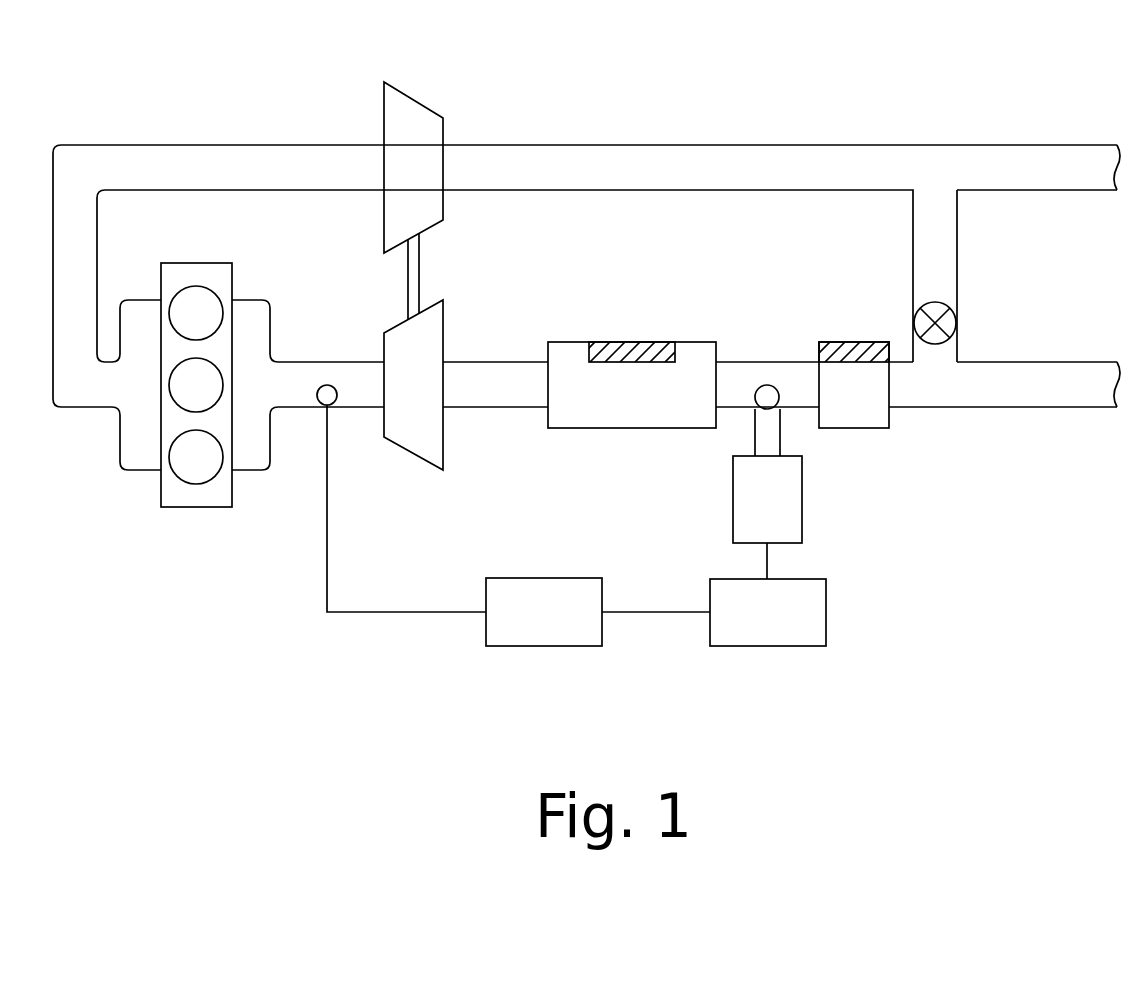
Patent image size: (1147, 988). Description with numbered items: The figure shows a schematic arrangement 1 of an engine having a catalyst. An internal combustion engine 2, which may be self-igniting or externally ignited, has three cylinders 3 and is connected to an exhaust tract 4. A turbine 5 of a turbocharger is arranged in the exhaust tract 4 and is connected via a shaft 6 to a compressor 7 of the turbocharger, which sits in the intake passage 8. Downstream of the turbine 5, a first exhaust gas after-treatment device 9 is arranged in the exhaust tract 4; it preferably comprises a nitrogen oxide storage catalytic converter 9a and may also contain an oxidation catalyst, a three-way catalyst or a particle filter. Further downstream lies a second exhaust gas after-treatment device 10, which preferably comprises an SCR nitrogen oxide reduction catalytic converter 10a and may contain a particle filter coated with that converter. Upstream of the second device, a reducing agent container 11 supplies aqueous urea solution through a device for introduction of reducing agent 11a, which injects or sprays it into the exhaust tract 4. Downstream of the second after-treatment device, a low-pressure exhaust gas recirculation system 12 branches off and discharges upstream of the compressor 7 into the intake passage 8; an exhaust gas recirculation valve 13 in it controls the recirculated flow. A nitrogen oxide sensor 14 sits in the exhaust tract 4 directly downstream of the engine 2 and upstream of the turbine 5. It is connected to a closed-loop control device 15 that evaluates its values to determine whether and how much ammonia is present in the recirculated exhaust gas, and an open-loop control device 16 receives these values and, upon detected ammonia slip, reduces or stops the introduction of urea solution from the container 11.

The arrangement 1 is at (183, 632).
The internal combustion engine 2 is at (157, 487).
The cylinders 3 is at (196, 457).
The exhaust tract 4 is at (250, 447).
The turbine 5 is at (418, 432).
The shaft 6 is at (423, 263).
The compressor 7 is at (420, 125).
The intake passage 8 is at (259, 158).
The first exhaust gas after-treatment device 9 is at (570, 362).
The nitrogen oxide storage catalytic converter 9a is at (638, 345).
The second exhaust gas after-treatment device 10 is at (827, 382).
The nitrogen oxide reduction catalytic converter 10a is at (845, 355).
The reducing agent container 11 is at (773, 497).
The device for introduction of reducing agent 11a is at (757, 408).
The low-pressure exhaust gas recirculation system 12 is at (940, 222).
The exhaust gas recirculation valve 13 is at (940, 330).
The nitrogen oxide sensor 14 is at (317, 400).
The closed-loop control device 15 is at (550, 622).
The open-loop control device 16 is at (777, 622).